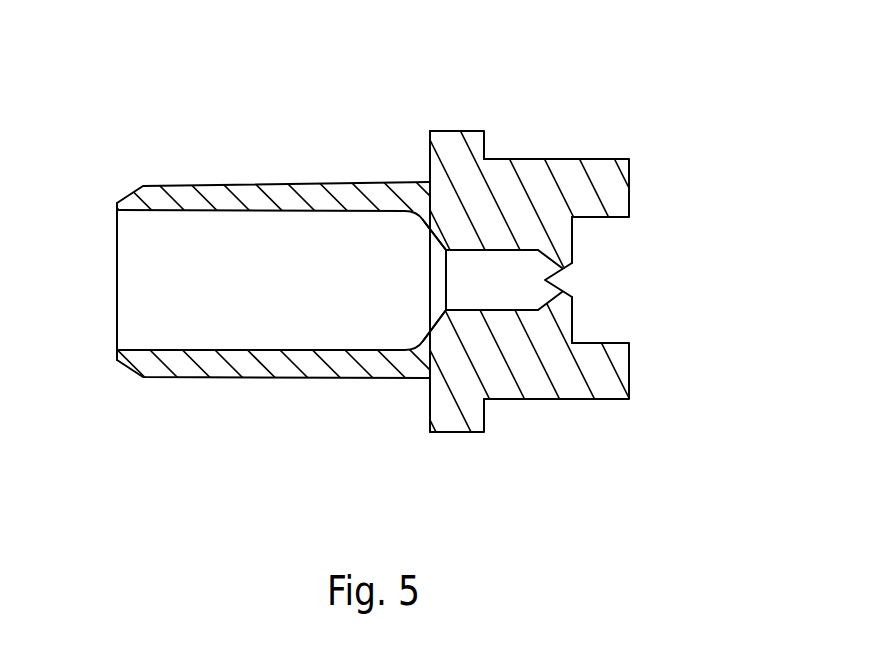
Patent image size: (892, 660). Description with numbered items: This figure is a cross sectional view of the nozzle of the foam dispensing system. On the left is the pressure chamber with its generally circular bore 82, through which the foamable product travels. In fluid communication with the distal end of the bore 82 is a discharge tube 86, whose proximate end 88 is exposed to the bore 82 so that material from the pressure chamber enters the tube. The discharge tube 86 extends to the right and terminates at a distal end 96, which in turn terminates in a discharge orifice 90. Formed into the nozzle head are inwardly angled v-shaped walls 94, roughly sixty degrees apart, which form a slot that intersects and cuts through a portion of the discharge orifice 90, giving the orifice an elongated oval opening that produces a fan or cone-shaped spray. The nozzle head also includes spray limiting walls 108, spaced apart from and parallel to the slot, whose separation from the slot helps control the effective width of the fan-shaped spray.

The generally circular bore 82 is at (152, 239).
The discharge tube 86 is at (467, 247).
The proximate end 88 is at (446, 250).
The discharge orifice 90 is at (545, 280).
The inwardly angled v-shaped walls 94 is at (572, 300).
The distal end 96 is at (560, 267).
The spray limiting walls 108 is at (630, 190).